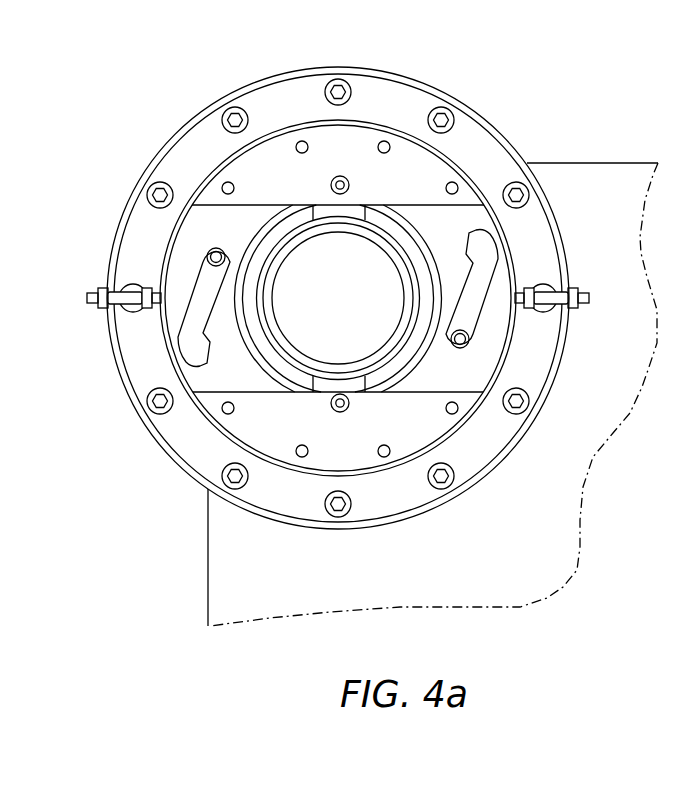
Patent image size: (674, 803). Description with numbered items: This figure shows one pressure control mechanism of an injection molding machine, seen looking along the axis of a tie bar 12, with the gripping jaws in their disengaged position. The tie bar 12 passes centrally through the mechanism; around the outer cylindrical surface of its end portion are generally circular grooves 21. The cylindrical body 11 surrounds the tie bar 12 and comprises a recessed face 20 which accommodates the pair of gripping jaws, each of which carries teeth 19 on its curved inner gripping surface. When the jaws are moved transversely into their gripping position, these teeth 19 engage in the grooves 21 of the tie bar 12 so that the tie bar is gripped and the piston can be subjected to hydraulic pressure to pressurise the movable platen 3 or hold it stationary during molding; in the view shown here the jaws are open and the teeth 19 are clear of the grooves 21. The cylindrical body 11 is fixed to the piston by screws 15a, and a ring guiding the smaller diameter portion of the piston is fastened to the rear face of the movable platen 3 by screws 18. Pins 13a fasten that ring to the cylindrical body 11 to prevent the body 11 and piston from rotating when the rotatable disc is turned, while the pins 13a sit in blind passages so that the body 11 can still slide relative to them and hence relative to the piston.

The movable platen 3 is at (628, 172).
The cylindrical body 11 is at (252, 170).
The tie bar 12 is at (362, 288).
The pins 13a is at (345, 180).
The screws 15a is at (302, 141).
The screws 18 is at (456, 112).
The teeth 19 is at (255, 245).
The recessed face 20 is at (362, 202).
The grooves 21 is at (292, 358).